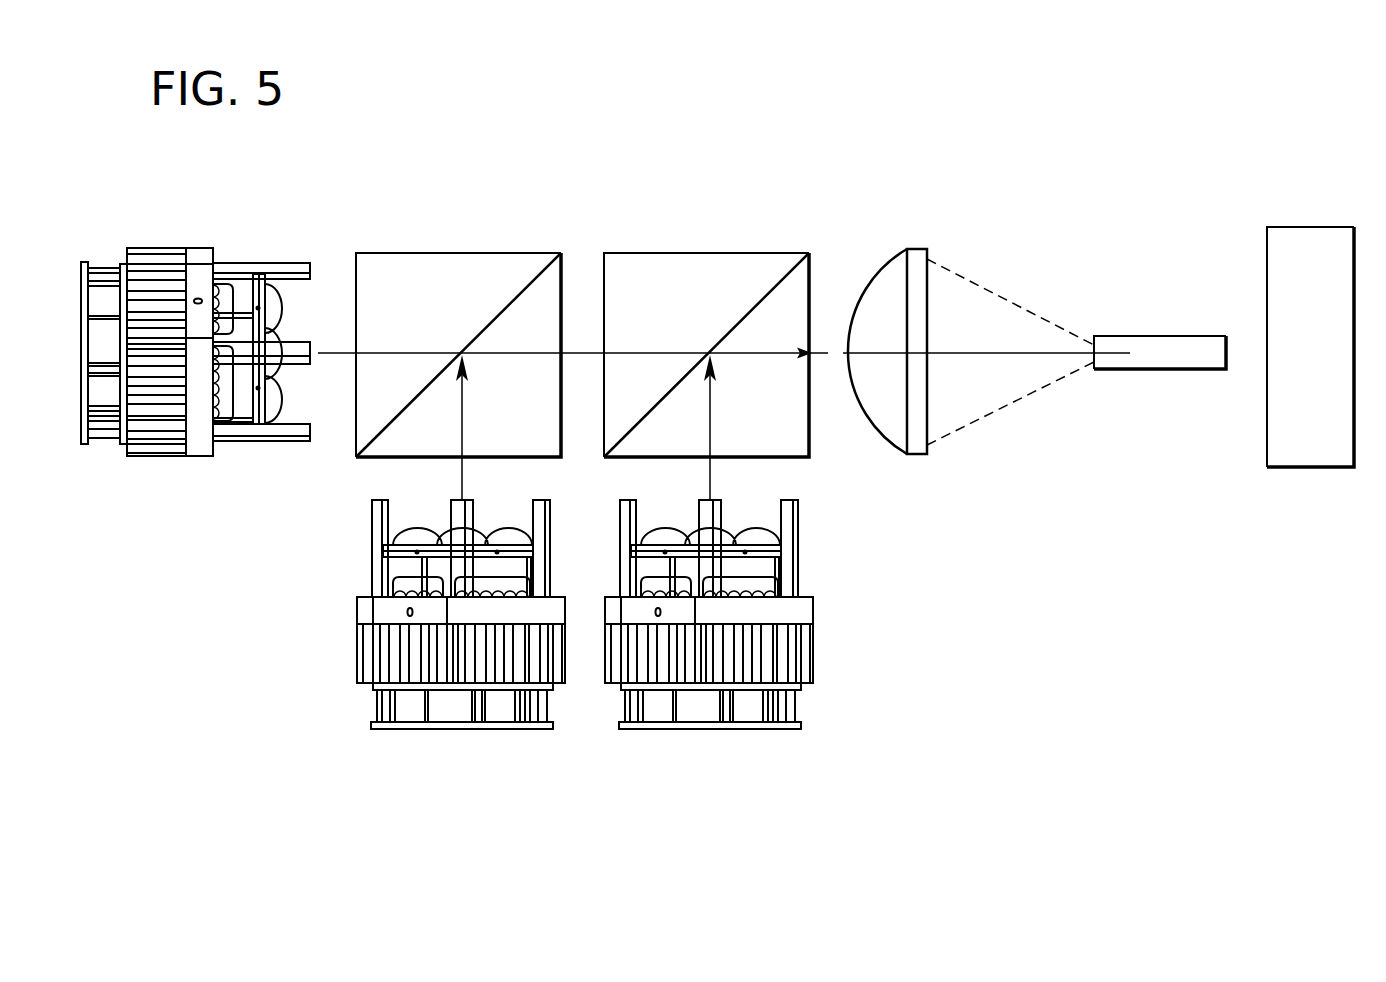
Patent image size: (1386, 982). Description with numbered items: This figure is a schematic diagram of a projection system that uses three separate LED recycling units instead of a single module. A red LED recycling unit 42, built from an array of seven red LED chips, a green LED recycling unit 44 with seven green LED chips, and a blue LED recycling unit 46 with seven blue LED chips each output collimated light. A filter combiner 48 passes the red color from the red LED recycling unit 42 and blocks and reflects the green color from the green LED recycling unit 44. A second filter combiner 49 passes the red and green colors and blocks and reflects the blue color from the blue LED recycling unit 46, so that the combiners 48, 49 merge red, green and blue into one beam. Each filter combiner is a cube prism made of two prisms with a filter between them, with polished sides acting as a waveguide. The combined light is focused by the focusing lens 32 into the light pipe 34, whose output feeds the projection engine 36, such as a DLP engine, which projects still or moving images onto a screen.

The focusing lens 32 is at (918, 246).
The light pipe 34 is at (1148, 335).
The projection engine 36 is at (1317, 226).
The red LED recycling unit 42 is at (186, 462).
The green LED recycling unit 44 is at (464, 746).
The blue LED recycling unit 46 is at (722, 746).
The filter combiner 48 is at (460, 252).
The filter combiner 49 is at (703, 252).